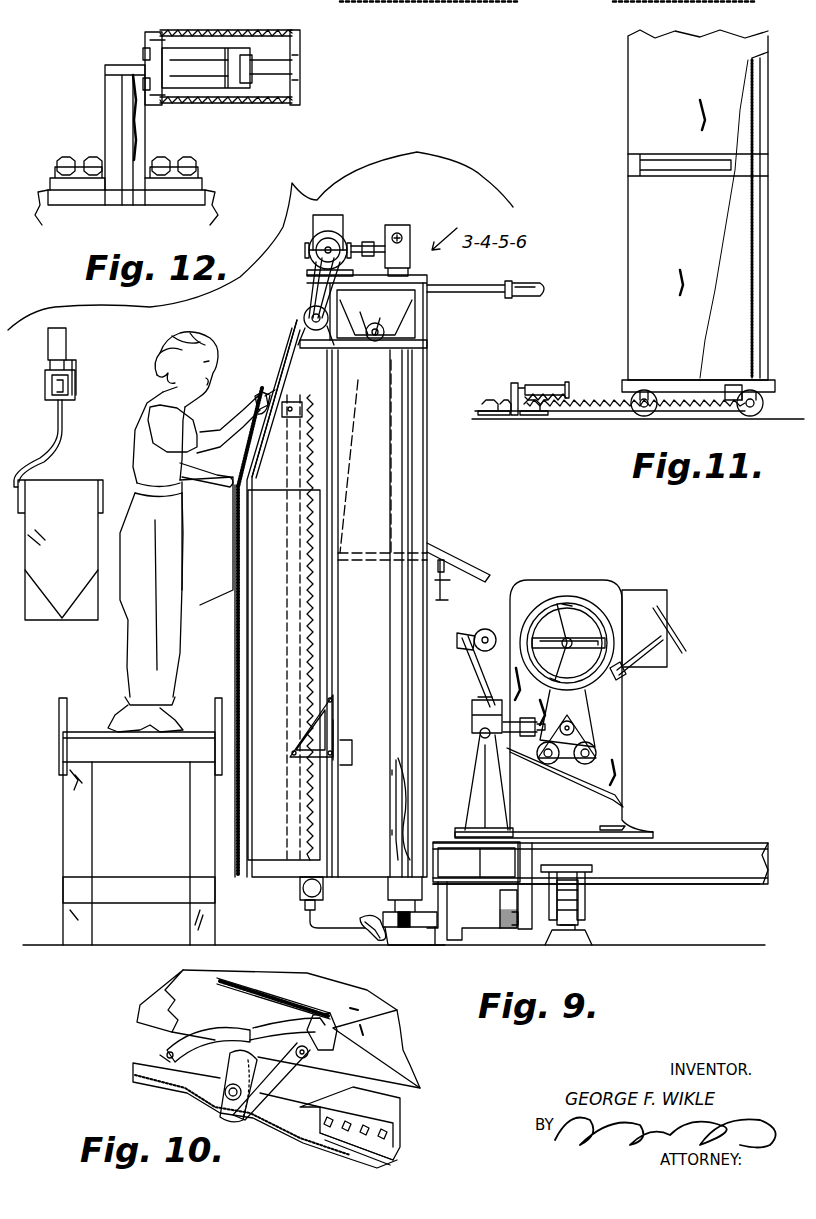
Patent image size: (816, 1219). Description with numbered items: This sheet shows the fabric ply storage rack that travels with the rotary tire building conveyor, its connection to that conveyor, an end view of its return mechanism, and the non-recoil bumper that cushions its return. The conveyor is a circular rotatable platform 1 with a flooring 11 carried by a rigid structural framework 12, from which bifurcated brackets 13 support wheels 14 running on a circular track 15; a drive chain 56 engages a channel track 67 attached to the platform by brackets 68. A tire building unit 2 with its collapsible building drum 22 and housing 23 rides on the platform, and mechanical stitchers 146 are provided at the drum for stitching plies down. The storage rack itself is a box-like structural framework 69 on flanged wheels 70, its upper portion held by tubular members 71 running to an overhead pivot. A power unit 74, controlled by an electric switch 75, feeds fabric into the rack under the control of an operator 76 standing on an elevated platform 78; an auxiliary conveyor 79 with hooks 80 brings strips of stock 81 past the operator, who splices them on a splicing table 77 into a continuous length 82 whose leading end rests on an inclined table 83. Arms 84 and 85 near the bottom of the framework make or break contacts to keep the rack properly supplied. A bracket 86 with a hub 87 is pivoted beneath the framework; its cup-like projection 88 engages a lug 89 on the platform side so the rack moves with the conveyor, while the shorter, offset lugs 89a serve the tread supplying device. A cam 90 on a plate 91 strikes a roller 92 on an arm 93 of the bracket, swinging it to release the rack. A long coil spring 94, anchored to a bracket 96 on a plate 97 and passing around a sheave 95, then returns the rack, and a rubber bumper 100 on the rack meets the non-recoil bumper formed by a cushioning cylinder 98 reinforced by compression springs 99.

In FIG. 9, the circular rotatable platform 1 is at (658, 914).
In FIG. 10, the circular rotatable platform 1 is at (436, 1084).
In FIG. 9, the tire building unit 2 is at (638, 570).
In FIG. 9, the flooring 11 is at (706, 838).
In FIG. 10, the flooring 11 is at (372, 1002).
In FIG. 9, the structural framework 12 is at (715, 882).
In FIG. 9, the bifurcated bracket 13 is at (585, 900).
In FIG. 9, the wheel 14 is at (580, 922).
In FIG. 9, the circular track 15 is at (586, 945).
In FIG. 9, the collapsible building drum 22 is at (570, 604).
In FIG. 9, the housing 23 is at (550, 562).
In FIG. 9, the drive chain 56 is at (500, 930).
In FIG. 9, the track 67 is at (510, 930).
In FIG. 9, the bracket 68 is at (518, 898).
In FIG. 11, the structural framework 69 is at (770, 368).
In FIG. 9, the structural framework 69 is at (425, 482).
In FIG. 9, the flanged wheel 70 is at (398, 916).
In FIG. 9, the tubular member 71 is at (532, 280).
In FIG. 9, the power unit 74 is at (363, 210).
In FIG. 9, the electric switch 75 is at (266, 404).
In FIG. 9, the operator 76 is at (140, 430).
In FIG. 9, the splicing table 77 is at (296, 362).
In FIG. 9, the elevated platform 78 is at (70, 834).
In FIG. 9, the auxiliary conveyor 79 is at (47, 385).
In FIG. 9, the hook 80 is at (36, 458).
In FIG. 9, the stock 81 is at (226, 542).
In FIG. 9, the continuous length 82 is at (392, 442).
In FIG. 9, the inclined table 83 is at (480, 577).
In FIG. 9, the arm 84 is at (308, 835).
In FIG. 9, the arm 85 is at (405, 830).
In FIG. 10, the bracket 86 is at (265, 1065).
In FIG. 10, the hub 87 is at (230, 1069).
In FIG. 10, the cup-like projection 88 is at (280, 1027).
In FIG. 9, the lug 89 is at (435, 866).
In FIG. 10, the lug 89 is at (325, 1010).
In FIG. 9, the lug 89a is at (498, 912).
In FIG. 10, the cam 90 is at (393, 1107).
In FIG. 10, the plate 91 is at (347, 1147).
In FIG. 10, the roller 92 is at (165, 1050).
In FIG. 10, the arm 93 is at (237, 1018).
In FIG. 11, the coil spring 94 is at (565, 402).
In FIG. 9, the coil spring 94 is at (305, 646).
In FIG. 11, the sheave 95 is at (728, 383).
In FIG. 12, the bracket 96 is at (110, 118).
In FIG. 11, the bracket 96 is at (512, 384).
In FIG. 9, the bracket 96 is at (322, 920).
In FIG. 12, the plate 97 is at (48, 192).
In FIG. 11, the plate 97 is at (474, 415).
In FIG. 12, the cushioning cylinder 98 is at (195, 98).
In FIG. 12, the compression spring 99 is at (255, 104).
In FIG. 11, the rubber bumper 100 is at (600, 392).
In FIG. 9, the mechanical stitcher 146 is at (457, 675).